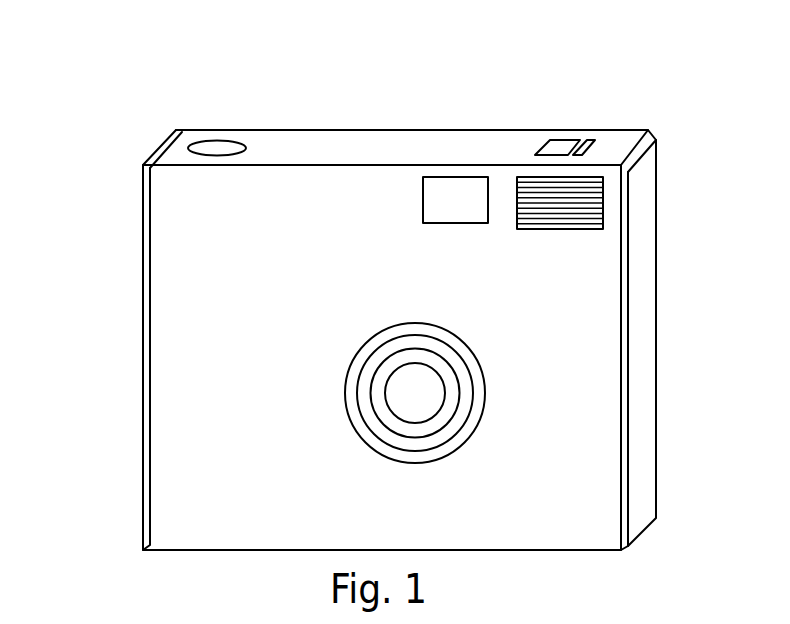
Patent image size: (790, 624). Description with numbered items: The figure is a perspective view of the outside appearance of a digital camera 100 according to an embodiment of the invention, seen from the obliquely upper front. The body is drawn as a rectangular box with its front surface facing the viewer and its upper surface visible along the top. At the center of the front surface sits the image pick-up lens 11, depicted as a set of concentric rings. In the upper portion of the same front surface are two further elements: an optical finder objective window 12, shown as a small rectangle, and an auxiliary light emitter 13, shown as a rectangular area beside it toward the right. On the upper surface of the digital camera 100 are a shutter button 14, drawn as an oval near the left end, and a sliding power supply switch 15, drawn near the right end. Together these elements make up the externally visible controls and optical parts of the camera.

The digital camera 100 is at (93, 104).
The image pick-up lens 11 is at (423, 397).
The optical finder objective window 12 is at (438, 193).
The auxiliary light emitter 13 is at (527, 187).
The shutter button 14 is at (205, 148).
The sliding power supply switch 15 is at (555, 150).